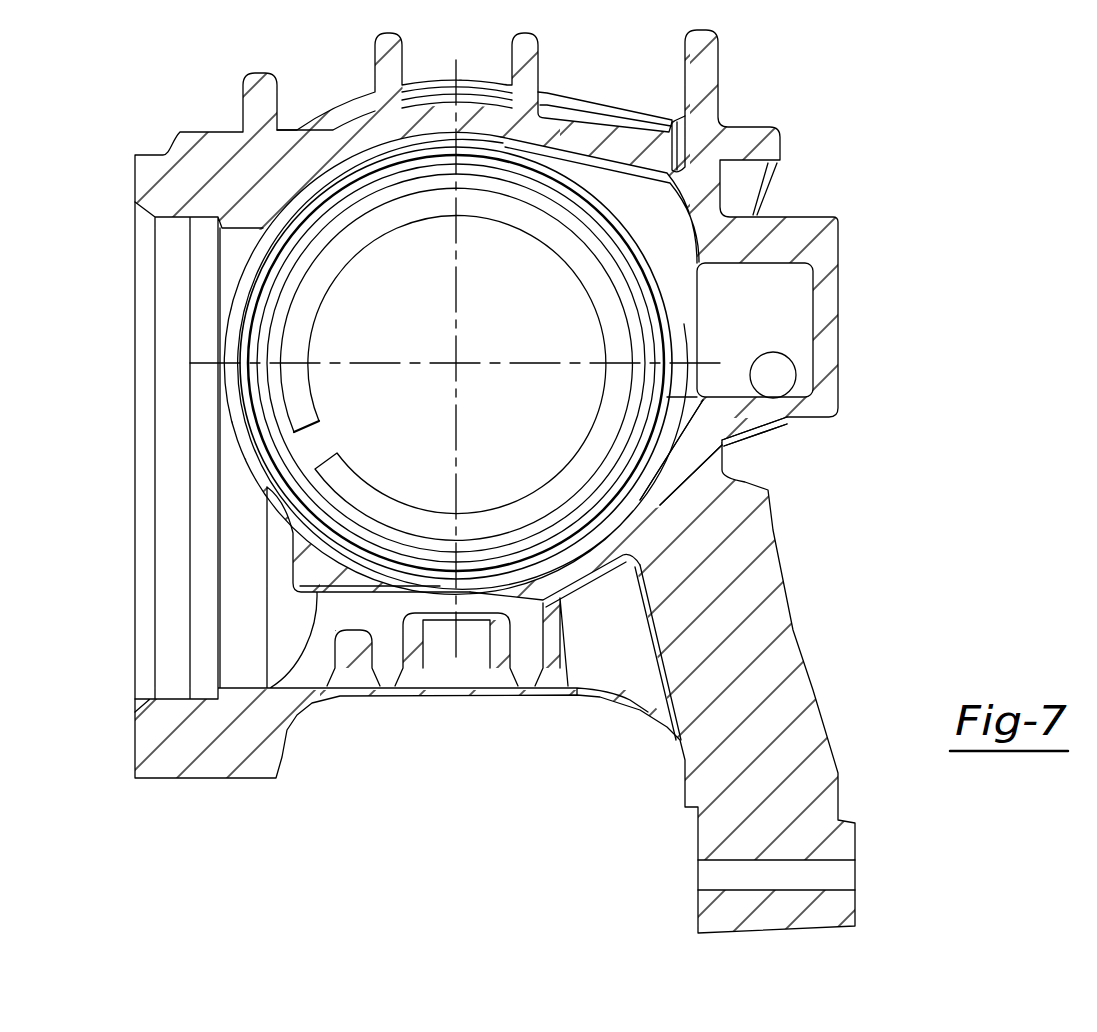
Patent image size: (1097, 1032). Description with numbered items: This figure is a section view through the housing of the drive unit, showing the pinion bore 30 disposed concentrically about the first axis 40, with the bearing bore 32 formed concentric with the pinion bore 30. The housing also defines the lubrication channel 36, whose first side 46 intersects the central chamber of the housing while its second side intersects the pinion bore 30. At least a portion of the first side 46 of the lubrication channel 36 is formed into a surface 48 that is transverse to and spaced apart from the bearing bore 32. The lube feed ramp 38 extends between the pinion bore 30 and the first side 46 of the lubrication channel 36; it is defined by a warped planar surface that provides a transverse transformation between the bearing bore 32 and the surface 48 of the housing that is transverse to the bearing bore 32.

The pinion bore 30 is at (335, 278).
The bearing bore 32 is at (610, 220).
The lubrication channel 36 is at (777, 310).
The lube feed ramp 38 is at (638, 275).
The first axis 40 is at (456, 363).
The first side of the lubrication channel 46 is at (673, 375).
The surface 48 is at (662, 462).